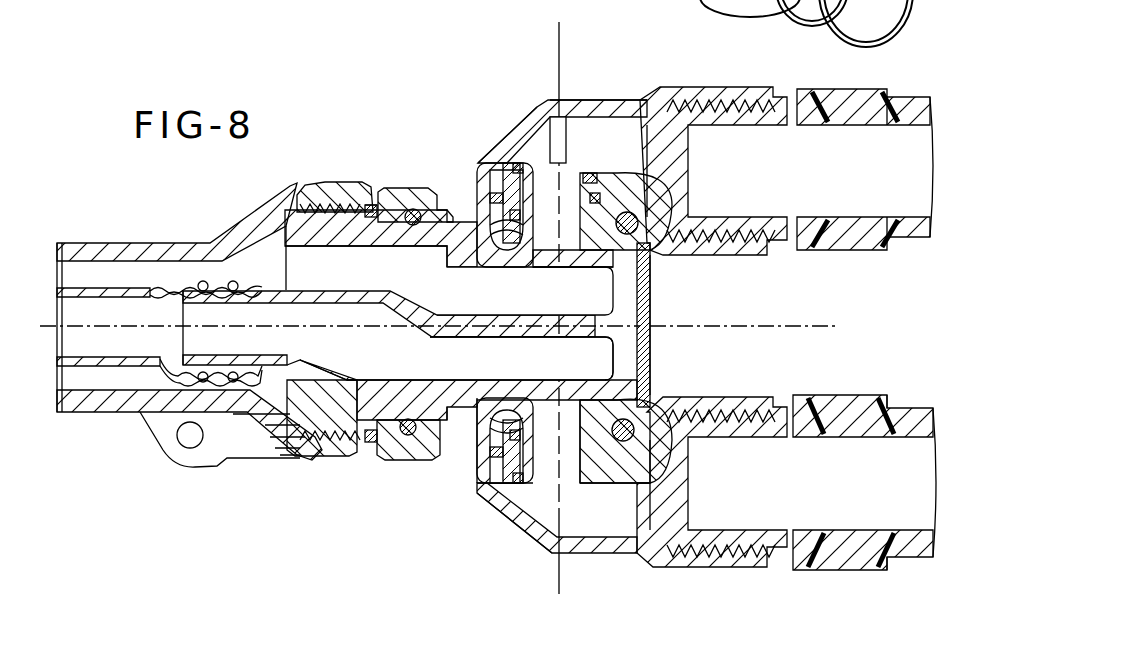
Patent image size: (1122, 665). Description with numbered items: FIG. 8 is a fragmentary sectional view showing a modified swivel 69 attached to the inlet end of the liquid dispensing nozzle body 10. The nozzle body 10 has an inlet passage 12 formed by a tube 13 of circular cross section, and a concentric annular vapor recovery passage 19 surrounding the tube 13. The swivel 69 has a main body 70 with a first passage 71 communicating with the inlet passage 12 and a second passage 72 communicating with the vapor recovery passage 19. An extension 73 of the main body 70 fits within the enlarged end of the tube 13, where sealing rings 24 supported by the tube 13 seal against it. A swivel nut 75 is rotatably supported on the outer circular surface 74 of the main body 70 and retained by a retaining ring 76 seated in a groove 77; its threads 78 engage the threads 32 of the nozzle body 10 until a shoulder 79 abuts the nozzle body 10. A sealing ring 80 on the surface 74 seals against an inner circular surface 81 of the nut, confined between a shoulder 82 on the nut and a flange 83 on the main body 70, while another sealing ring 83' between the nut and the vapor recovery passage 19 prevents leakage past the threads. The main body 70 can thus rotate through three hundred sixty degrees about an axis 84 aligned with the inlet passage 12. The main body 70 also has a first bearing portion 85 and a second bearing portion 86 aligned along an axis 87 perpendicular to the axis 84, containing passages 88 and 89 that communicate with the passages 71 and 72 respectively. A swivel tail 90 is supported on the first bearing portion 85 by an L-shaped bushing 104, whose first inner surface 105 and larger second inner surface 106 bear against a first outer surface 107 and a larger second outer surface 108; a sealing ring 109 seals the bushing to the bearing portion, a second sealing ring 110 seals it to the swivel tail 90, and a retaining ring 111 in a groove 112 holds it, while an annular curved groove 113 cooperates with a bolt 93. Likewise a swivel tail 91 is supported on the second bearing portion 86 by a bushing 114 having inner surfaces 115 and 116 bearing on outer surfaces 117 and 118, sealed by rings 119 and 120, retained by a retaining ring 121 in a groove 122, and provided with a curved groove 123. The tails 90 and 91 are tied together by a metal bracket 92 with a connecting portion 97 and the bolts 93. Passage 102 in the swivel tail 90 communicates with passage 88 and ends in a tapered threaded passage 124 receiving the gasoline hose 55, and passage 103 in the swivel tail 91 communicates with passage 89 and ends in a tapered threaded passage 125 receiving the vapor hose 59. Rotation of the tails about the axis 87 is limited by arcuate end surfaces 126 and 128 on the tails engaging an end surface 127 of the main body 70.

The liquid dispensing nozzle body 10 is at (158, 238).
The inlet passage 12 is at (110, 307).
The tube 13 is at (93, 288).
The vapor recovery passage 19 is at (103, 380).
The sealing rings 24 is at (233, 281).
The threads 32 is at (323, 463).
The hose 55 is at (910, 407).
The hose 59 is at (903, 232).
The swivel 69 is at (500, 133).
The main body 70 is at (278, 392).
The first passage 71 is at (385, 364).
The second passage 72 is at (456, 308).
The extension 73 is at (187, 308).
The outer circular surface 74 is at (322, 228).
The swivel nut 75 is at (383, 463).
The retaining ring 76 is at (287, 222).
The groove 77 is at (313, 364).
The threads 78 is at (352, 205).
The shoulder 79 is at (367, 440).
The sealing ring 80 is at (408, 437).
The inner circular surface 81 is at (393, 205).
The shoulder 82 is at (380, 230).
The flange 83 is at (423, 181).
The sealing ring 83' is at (390, 158).
The axis 84 is at (797, 312).
The first bearing portion 85 is at (637, 470).
The second bearing portion 86 is at (592, 172).
The axis 87 is at (558, 30).
The passage 88 is at (577, 480).
The passage 89 is at (545, 163).
The swivel tail 90 is at (653, 556).
The swivel tail 91 is at (737, 88).
The metal bracket 92 is at (653, 310).
The bolts 93 is at (638, 217).
The connecting portion 97 is at (650, 270).
The passage 102 is at (550, 527).
The passage 103 is at (573, 101).
The bushing 104 is at (487, 477).
The first inner surface 105 is at (597, 457).
The second inner surface 106 is at (587, 403).
The first outer surface 107 is at (487, 470).
The second outer surface 108 is at (613, 390).
The sealing ring 109 is at (587, 432).
The second sealing ring 110 is at (650, 447).
The retaining ring 111 is at (610, 487).
The groove 112 is at (527, 463).
The annular curved groove 113 is at (523, 402).
The bushing 114 is at (497, 164).
The first inner surface 115 is at (523, 187).
The second inner surface 116 is at (522, 248).
The first outer surface 117 is at (607, 180).
The second outer surface 118 is at (597, 251).
The sealing ring 119 is at (520, 213).
The second sealing ring 120 is at (640, 185).
The retaining ring 121 is at (520, 160).
The groove 122 is at (583, 117).
The annular curved groove 123 is at (490, 226).
The tapered threaded passage 124 is at (737, 395).
The tapered threaded passage 125 is at (797, 92).
The end surface 126 is at (470, 405).
The end surface 127 is at (460, 400).
The end surface 128 is at (443, 250).